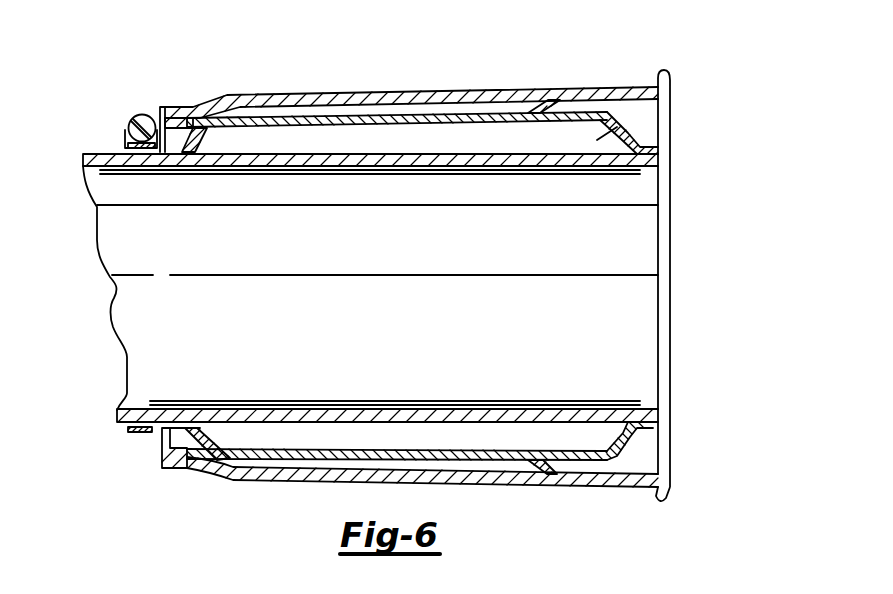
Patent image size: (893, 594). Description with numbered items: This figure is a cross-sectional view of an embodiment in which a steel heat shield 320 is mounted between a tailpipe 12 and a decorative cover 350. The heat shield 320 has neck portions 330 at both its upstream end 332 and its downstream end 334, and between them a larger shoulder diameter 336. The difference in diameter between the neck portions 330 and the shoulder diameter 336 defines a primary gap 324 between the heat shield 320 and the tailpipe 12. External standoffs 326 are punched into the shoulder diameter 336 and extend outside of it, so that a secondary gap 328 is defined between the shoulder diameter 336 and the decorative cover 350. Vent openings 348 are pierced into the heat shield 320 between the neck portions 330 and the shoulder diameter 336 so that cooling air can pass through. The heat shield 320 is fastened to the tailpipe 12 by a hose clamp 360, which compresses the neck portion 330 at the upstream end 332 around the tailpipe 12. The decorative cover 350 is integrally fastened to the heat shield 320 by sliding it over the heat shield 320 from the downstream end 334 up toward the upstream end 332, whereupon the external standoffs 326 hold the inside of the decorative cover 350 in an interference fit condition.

The tailpipe 12 is at (117, 155).
The steel heat shield 320 is at (305, 106).
The primary gap 324 is at (630, 135).
The external standoffs 326 is at (553, 115).
The secondary gap 328 is at (462, 110).
The neck portions 330 is at (657, 148).
The upstream end 332 is at (180, 148).
The downstream end 334 is at (653, 422).
The shoulder diameter 336 is at (407, 104).
The vent openings 348 is at (200, 140).
The decorative cover 350 is at (547, 108).
The hose clamp 360 is at (125, 128).